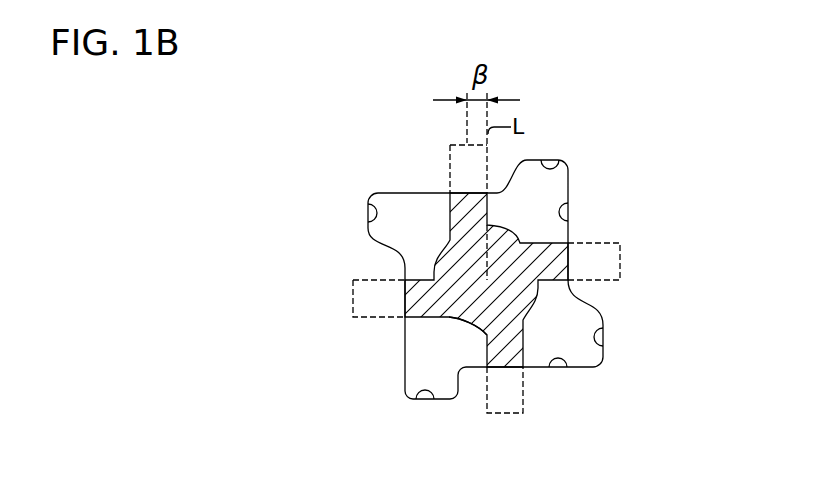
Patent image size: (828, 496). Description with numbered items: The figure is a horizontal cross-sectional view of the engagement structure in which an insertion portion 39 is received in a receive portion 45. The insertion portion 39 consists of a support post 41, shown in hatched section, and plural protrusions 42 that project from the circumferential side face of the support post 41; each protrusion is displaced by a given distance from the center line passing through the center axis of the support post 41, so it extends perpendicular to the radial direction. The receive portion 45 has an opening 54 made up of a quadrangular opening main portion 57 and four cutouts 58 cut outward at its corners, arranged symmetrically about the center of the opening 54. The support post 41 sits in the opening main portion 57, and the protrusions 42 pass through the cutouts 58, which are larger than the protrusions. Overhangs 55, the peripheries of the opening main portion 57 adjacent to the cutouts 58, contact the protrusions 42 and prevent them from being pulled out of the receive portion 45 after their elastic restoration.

The insertion portion 39 is at (452, 320).
The support post 41 is at (436, 258).
The protrusion 42 is at (353, 297).
The receive portion 45 is at (408, 192).
The opening 54 is at (567, 370).
The overhang 55 is at (398, 267).
The opening main portion 57 is at (573, 204).
The cutout 58 is at (367, 206).